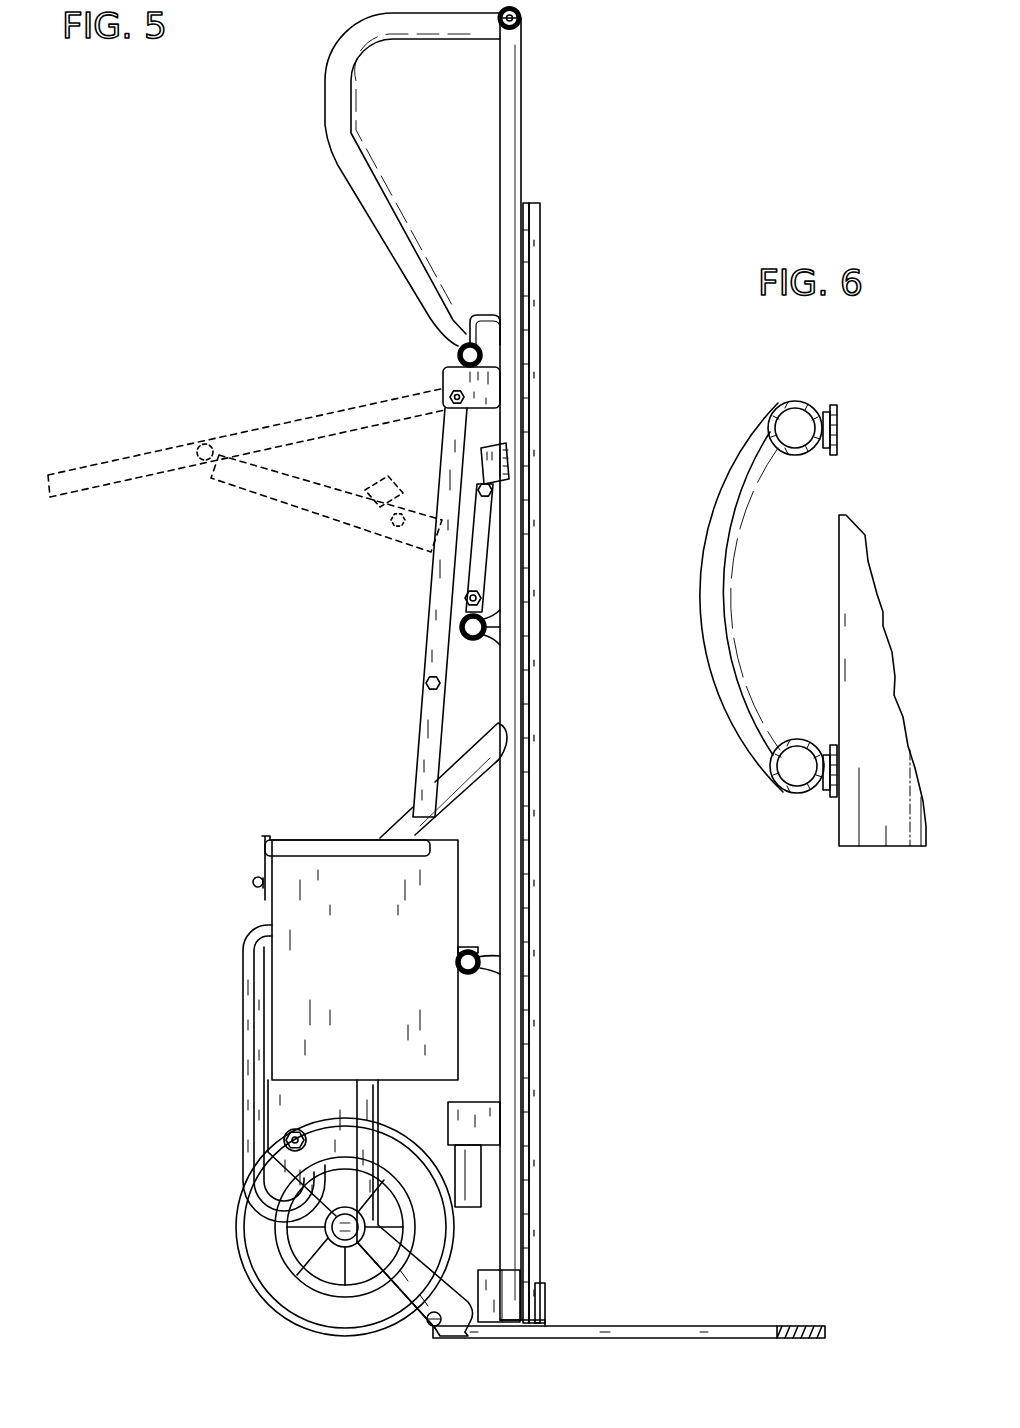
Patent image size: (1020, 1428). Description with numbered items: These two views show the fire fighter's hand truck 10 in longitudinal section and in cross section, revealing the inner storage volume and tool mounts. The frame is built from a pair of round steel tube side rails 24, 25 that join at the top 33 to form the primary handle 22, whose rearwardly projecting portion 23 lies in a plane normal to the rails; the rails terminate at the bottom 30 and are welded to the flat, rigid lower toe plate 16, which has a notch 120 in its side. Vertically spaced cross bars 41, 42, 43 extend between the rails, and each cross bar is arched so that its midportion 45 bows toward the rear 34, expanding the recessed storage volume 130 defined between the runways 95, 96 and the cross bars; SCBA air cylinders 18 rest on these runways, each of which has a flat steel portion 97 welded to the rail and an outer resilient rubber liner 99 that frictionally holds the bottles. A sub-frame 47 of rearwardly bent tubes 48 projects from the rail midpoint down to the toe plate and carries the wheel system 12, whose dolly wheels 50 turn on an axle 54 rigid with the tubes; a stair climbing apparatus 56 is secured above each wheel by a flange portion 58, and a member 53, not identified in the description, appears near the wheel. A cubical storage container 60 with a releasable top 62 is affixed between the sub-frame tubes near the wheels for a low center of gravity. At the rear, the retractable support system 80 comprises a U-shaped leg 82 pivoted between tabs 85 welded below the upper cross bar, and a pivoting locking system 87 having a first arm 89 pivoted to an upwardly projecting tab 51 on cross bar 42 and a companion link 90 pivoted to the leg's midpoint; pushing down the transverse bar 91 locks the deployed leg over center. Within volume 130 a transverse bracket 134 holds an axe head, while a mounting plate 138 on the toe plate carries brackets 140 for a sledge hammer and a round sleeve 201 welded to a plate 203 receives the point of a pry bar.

In FIG. 5, the hand truck 10 is at (233, 98).
In FIG. 5, the wheel system 12 is at (215, 1236).
In FIG. 5, the lower toe plate 16 is at (738, 1326).
In FIG. 6, the SCBA air cylinders 18 is at (856, 693).
In FIG. 5, the upper primary handle 22 is at (534, 24).
In FIG. 5, the rearwardly projecting portion 23 is at (325, 105).
In FIG. 5, the side rail 24 is at (522, 172).
In FIG. 6, the side rail 24 is at (789, 791).
In FIG. 6, the frame rail 25 is at (803, 403).
In FIG. 5, the bottom of the apparatus 30 is at (594, 1301).
In FIG. 5, the top of the apparatus 33 is at (578, 665).
In FIG. 5, the rear of the hand truck 34 is at (236, 652).
In FIG. 6, the rear of the hand truck 34 is at (703, 672).
In FIG. 5, the cross bar 41 is at (460, 962).
In FIG. 5, the cross bar 42 is at (490, 626).
In FIG. 6, the cross bar 42 is at (701, 531).
In FIG. 5, the upper cross bar 43 is at (458, 357).
In FIG. 6, the midportion 45 is at (731, 556).
In FIG. 5, the sub-frame 47 is at (365, 803).
In FIG. 5, the bent tube 48 is at (395, 831).
In FIG. 5, the dolly wheel 50 is at (250, 1226).
In FIG. 5, the upwardly projecting tab 51 is at (481, 597).
In FIG. 5, the strut 53 is at (400, 1316).
In FIG. 5, the axle 54 is at (333, 1234).
In FIG. 5, the stair climbing apparatus 56 is at (236, 1005).
In FIG. 5, the flange portion 58 is at (290, 1110).
In FIG. 5, the storage container 60 is at (262, 836).
In FIG. 5, the releasable top 62 is at (262, 846).
In FIG. 5, the retractable support system 80 is at (385, 485).
In FIG. 5, the U-shaped leg 82 is at (432, 715).
In FIG. 5, the rearwardly projecting tabs 85 is at (452, 371).
In FIG. 5, the pivoting locking system 87 is at (510, 438).
In FIG. 5, the first arm 89 is at (474, 578).
In FIG. 5, the companion link 90 is at (473, 518).
In FIG. 5, the transverse bar 91 is at (402, 488).
In FIG. 5, the runway 95 is at (596, 763).
In FIG. 6, the runway 95 is at (836, 822).
In FIG. 6, the runway 96 is at (844, 626).
In FIG. 5, the flat steel portion 97 is at (530, 290).
In FIG. 6, the flat steel portion 97 is at (824, 456).
In FIG. 5, the resilient rubber liner 99 is at (541, 230).
In FIG. 6, the resilient rubber liner 99 is at (838, 441).
In FIG. 5, the notch 120 is at (795, 1326).
In FIG. 5, the recessed storage volume 130 is at (497, 320).
In FIG. 6, the recessed storage volume 130 is at (834, 656).
In FIG. 5, the transverse bracket 134 is at (478, 1105).
In FIG. 5, the mounting plate 138 is at (585, 1284).
In FIG. 5, the bracket 140 is at (465, 1288).
In FIG. 5, the round sleeve 201 is at (520, 1273).
In FIG. 5, the plate 203 is at (520, 1325).